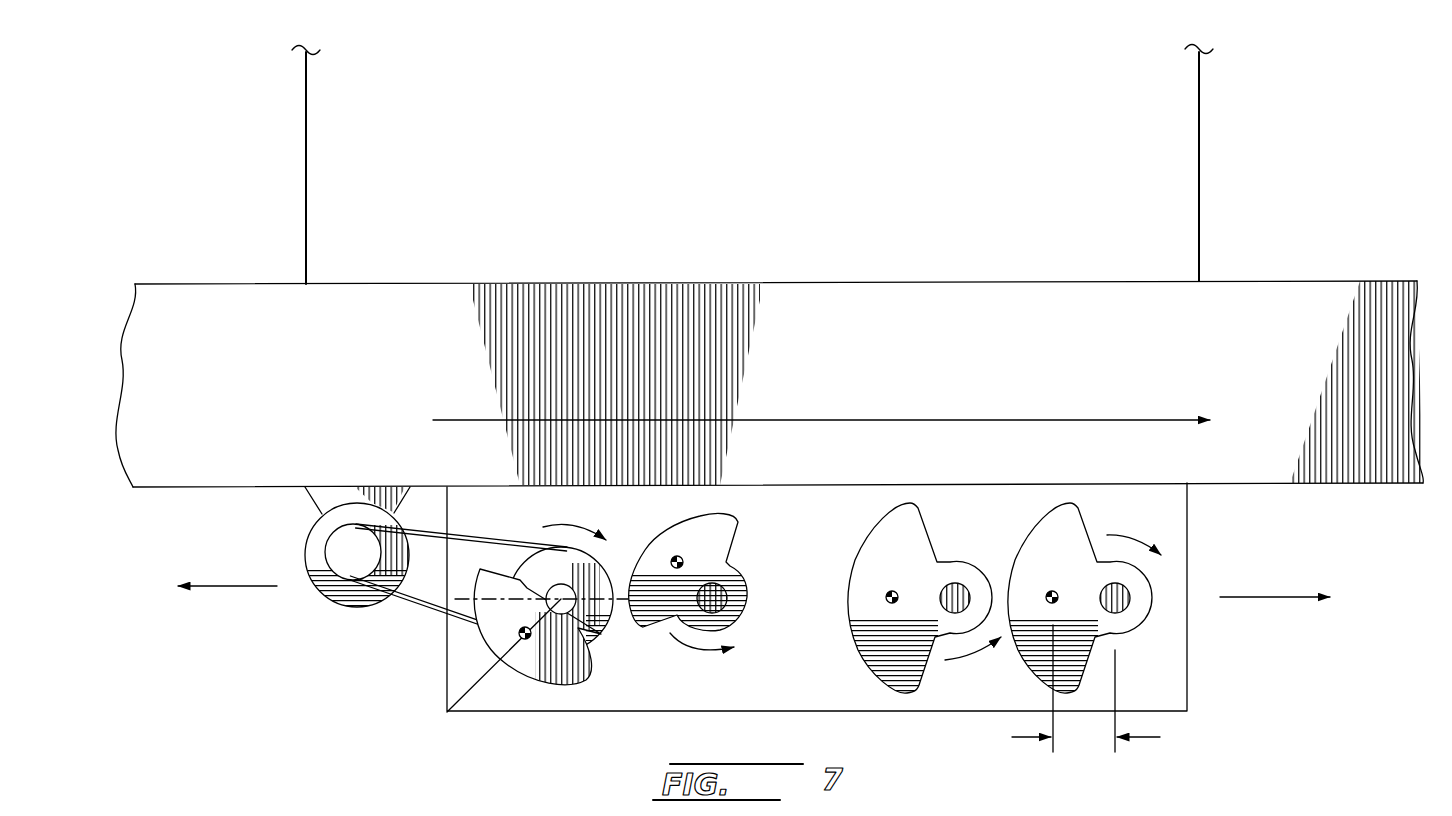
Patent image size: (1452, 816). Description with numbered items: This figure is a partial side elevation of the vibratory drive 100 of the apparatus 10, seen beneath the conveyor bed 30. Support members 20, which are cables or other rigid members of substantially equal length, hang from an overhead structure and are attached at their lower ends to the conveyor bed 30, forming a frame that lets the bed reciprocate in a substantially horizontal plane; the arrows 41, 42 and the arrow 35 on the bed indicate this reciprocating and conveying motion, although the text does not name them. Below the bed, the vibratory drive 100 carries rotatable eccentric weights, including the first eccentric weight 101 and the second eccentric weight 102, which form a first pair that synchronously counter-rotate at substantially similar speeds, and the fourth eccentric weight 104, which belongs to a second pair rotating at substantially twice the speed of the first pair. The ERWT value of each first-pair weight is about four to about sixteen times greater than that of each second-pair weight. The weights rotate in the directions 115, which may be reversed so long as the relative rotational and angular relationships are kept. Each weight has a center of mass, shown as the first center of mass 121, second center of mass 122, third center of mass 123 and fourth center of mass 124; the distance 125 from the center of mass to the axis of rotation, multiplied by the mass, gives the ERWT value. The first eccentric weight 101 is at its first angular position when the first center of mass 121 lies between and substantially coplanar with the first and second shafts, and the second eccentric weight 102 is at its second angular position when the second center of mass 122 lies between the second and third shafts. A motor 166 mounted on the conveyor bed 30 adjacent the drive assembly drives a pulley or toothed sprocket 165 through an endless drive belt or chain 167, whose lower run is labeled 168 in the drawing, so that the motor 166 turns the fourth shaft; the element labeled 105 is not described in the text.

The apparatus 10 is at (324, 781).
The support members 20 is at (308, 161).
The conveyor bed 30 is at (915, 281).
The direction of belt travel 35 is at (883, 413).
The first direction 41 is at (232, 594).
The second direction 42 is at (1273, 601).
The vibratory drive 100 is at (948, 717).
The first eccentric weight 101 is at (1142, 631).
The second eccentric weight 102 is at (871, 672).
The fourth eccentric weight 104 is at (567, 690).
The fourth cam 105 is at (746, 548).
The directions of rotation 115 is at (673, 653).
The first center of mass 121 is at (1049, 589).
The second center of mass 122 is at (879, 590).
The third center of mass 123 is at (669, 558).
The fourth center of mass 124 is at (523, 643).
The distance 125 is at (1086, 690).
The pulley or toothed sprocket 165 is at (618, 634).
The motor 166 is at (303, 534).
The endless drive belt or chain 167 is at (470, 532).
The lower belt run 168 is at (392, 605).